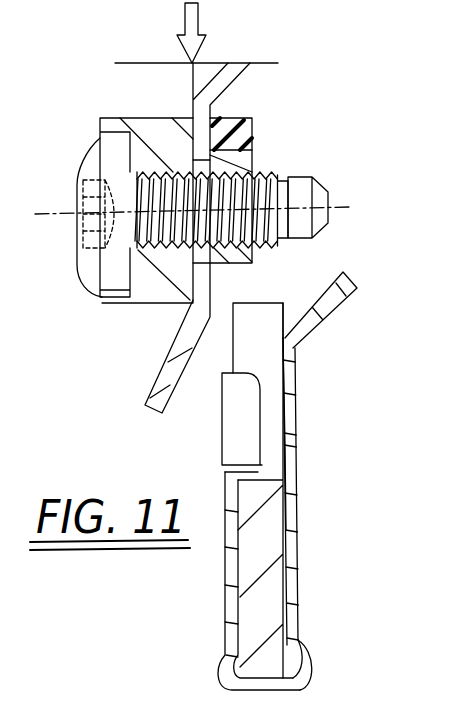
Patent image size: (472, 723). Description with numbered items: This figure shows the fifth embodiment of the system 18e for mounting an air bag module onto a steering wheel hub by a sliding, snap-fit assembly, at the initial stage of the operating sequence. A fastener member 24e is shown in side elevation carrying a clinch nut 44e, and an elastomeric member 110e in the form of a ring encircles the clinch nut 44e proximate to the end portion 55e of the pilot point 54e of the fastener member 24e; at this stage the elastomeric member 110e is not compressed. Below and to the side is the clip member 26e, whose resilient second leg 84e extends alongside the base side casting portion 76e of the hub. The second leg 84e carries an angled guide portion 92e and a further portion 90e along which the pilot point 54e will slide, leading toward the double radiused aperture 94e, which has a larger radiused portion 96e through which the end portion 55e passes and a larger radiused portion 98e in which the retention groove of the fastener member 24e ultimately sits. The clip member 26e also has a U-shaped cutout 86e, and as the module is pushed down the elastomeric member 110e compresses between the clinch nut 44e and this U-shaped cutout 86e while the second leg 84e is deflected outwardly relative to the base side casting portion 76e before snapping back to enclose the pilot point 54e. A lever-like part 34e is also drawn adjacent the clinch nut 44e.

The clinch nut 44e is at (152, 130).
The elastomeric member 110e is at (238, 127).
The fastener member 24e is at (81, 268).
The pilot point 54e is at (318, 221).
The end portion 55e is at (313, 190).
The lever 34e is at (153, 389).
The angled guide portion 92e is at (370, 294).
The double radiused aperture 94e is at (285, 350).
The larger radiused portion 98e is at (286, 383).
The larger radiused portion 96e is at (286, 418).
The portion 90e is at (288, 478).
The second leg 84e is at (298, 532).
The clip member 26e is at (298, 641).
The U-shaped cutout 86e is at (240, 467).
The base side casting portion 76e is at (250, 563).
The system 18e is at (192, 648).